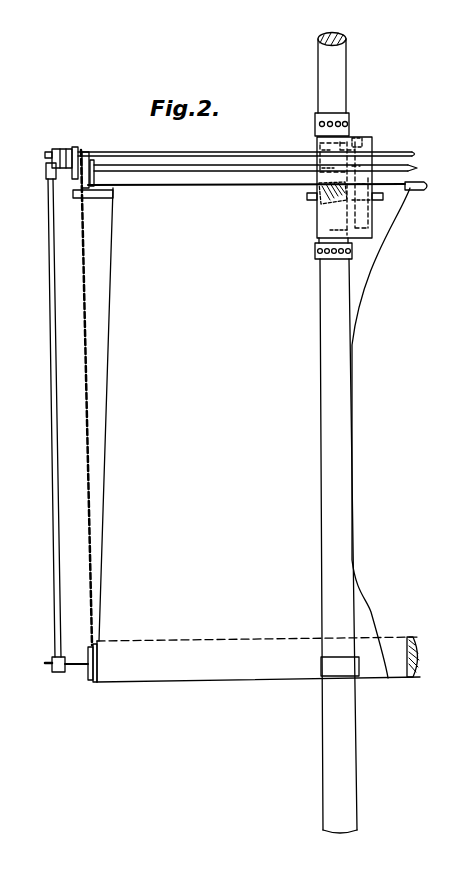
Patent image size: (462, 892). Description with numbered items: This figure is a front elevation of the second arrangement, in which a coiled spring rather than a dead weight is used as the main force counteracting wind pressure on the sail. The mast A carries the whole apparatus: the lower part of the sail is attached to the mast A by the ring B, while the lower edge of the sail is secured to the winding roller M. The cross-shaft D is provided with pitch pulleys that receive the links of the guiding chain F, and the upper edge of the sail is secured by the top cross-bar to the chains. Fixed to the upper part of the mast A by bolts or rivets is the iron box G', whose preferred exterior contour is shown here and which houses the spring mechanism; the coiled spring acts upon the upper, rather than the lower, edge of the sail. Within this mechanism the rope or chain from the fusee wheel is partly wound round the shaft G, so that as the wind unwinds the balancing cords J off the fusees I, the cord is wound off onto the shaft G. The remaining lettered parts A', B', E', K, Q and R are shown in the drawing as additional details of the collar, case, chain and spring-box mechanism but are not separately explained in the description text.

The mast A is at (336, 433).
The lower collar A' is at (333, 263).
The ring B is at (340, 666).
The mechanism part in case B' is at (328, 174).
The cross-shaft D is at (255, 165).
The chain E' is at (81, 397).
The guiding chain F is at (327, 149).
The shaft G is at (246, 146).
The iron box G' is at (338, 223).
The fusee I is at (62, 148).
The balancing cord J is at (361, 185).
The mechanism part K is at (357, 143).
The winding roller M is at (254, 668).
The mechanism part Q is at (362, 199).
The pawl R is at (333, 193).